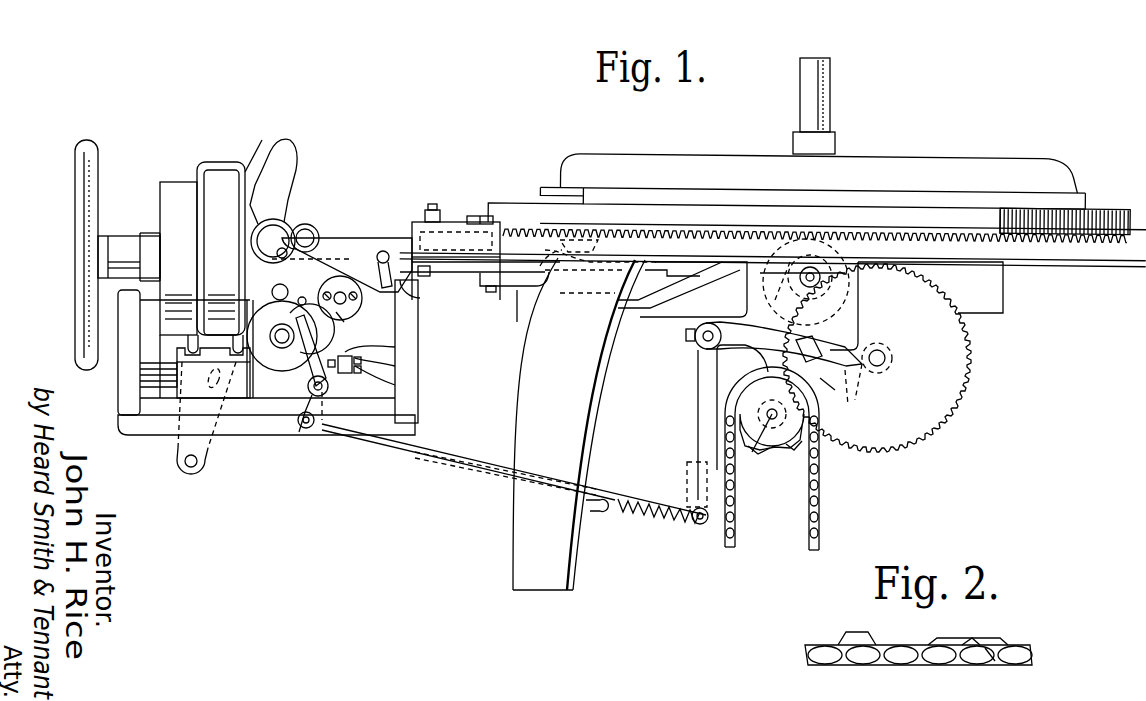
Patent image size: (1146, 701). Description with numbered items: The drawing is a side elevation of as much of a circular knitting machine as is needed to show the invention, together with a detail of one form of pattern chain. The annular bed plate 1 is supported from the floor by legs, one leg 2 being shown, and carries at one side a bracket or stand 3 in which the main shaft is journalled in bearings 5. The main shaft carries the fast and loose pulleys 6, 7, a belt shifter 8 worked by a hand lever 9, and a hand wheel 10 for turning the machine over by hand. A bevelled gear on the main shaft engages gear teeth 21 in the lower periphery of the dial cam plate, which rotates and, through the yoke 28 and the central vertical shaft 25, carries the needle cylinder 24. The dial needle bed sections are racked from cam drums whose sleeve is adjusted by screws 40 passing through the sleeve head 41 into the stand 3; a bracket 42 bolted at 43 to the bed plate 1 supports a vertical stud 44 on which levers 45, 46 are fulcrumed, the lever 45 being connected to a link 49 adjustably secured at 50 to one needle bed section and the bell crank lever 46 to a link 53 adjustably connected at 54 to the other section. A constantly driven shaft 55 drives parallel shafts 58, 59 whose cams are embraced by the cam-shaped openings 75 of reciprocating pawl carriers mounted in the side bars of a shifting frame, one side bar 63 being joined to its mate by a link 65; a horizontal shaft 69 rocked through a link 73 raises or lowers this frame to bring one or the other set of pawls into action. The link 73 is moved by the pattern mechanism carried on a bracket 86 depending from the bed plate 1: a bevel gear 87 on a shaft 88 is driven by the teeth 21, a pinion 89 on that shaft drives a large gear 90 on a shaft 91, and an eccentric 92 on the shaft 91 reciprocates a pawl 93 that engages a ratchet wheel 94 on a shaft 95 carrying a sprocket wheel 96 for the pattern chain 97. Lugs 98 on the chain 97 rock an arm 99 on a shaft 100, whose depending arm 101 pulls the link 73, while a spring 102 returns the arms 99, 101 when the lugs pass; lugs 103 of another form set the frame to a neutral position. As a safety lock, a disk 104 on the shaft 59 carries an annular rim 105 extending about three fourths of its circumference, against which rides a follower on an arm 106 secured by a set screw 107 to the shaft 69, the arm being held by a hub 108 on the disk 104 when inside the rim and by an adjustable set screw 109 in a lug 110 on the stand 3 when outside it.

In FIG. 1, the bed plate 1 is at (1094, 260).
In FIG. 1, the leg or standard 2 is at (518, 542).
In FIG. 1, the bracket or stand 3 is at (136, 435).
In FIG. 1, the bearings 5 is at (124, 246).
In FIG. 1, the fast pulley 6 is at (222, 190).
In FIG. 1, the loose pulley 7 is at (172, 192).
In FIG. 1, the belt shifter 8 is at (245, 172).
In FIG. 1, the hand lever 9 is at (292, 160).
In FIG. 1, the hand wheel 10 is at (93, 150).
In FIG. 1, the gear teeth 21 is at (656, 232).
In FIG. 1, the needle cylinder 24 is at (1003, 293).
In FIG. 1, the central vertical shaft 25 is at (823, 91).
In FIG. 1, the yoke 28 is at (870, 158).
In FIG. 1, the screws 40 is at (355, 305).
In FIG. 1, the head of sleeve 41 is at (345, 318).
In FIG. 1, the bracket 42 is at (450, 228).
In FIG. 1, the bolt 43 is at (478, 214).
In FIG. 1, the vertical stud 44 is at (432, 208).
In FIG. 1, the lever 45 is at (473, 290).
In FIG. 1, the bell crank lever 46 is at (437, 298).
In FIG. 1, the link 49 is at (514, 300).
In FIG. 1, the adjustable connection 50 is at (592, 262).
In FIG. 1, the link 53 is at (491, 306).
In FIG. 1, the adjustable connection 54 is at (893, 244).
In FIG. 1, the shaft 55 is at (287, 290).
In FIG. 1, the shaft 58 is at (288, 254).
In FIG. 1, the shaft 59 is at (270, 334).
In FIG. 1, the side bar 63 is at (343, 242).
In FIG. 1, the link 65 is at (385, 252).
In FIG. 1, the horizontal shaft 69 is at (328, 386).
In FIG. 1, the link 73 is at (436, 452).
In FIG. 1, the cam-shaped recess 75 is at (287, 232).
In FIG. 1, the bracket 86 is at (860, 314).
In FIG. 1, the bevel gear 87 is at (862, 291).
In FIG. 1, the shaft 88 is at (800, 280).
In FIG. 1, the pinion 89 is at (770, 293).
In FIG. 1, the large gear 90 is at (969, 384).
In FIG. 1, the shaft 91 is at (887, 358).
In FIG. 1, the eccentric 92 is at (868, 385).
In FIG. 1, the pawl 93 is at (851, 394).
In FIG. 1, the ratchet wheel 94 is at (784, 455).
In FIG. 1, the shaft 95 is at (762, 447).
In FIG. 1, the sprocket wheel 96 is at (792, 447).
In FIG. 1, the pattern chain 97 is at (819, 503).
In FIG. 2, the pattern chain 97 is at (938, 660).
In FIG. 1, the lugs 98 is at (842, 408).
In FIG. 2, the lugs 98 is at (851, 632).
In FIG. 1, the arm 99 is at (808, 348).
In FIG. 1, the shaft 100 is at (700, 342).
In FIG. 1, the depending arm 101 is at (697, 408).
In FIG. 1, the spring 102 is at (625, 512).
In FIG. 2, the lugs 103 is at (950, 638).
In FIG. 1, the disk 104 is at (242, 398).
In FIG. 1, the annular rim 105 is at (302, 318).
In FIG. 1, the arm 106 is at (395, 347).
In FIG. 1, the set screw 107 is at (303, 410).
In FIG. 1, the hub 108 is at (283, 347).
In FIG. 1, the adjustable set screw 109 is at (395, 366).
In FIG. 1, the lug 110 is at (395, 385).